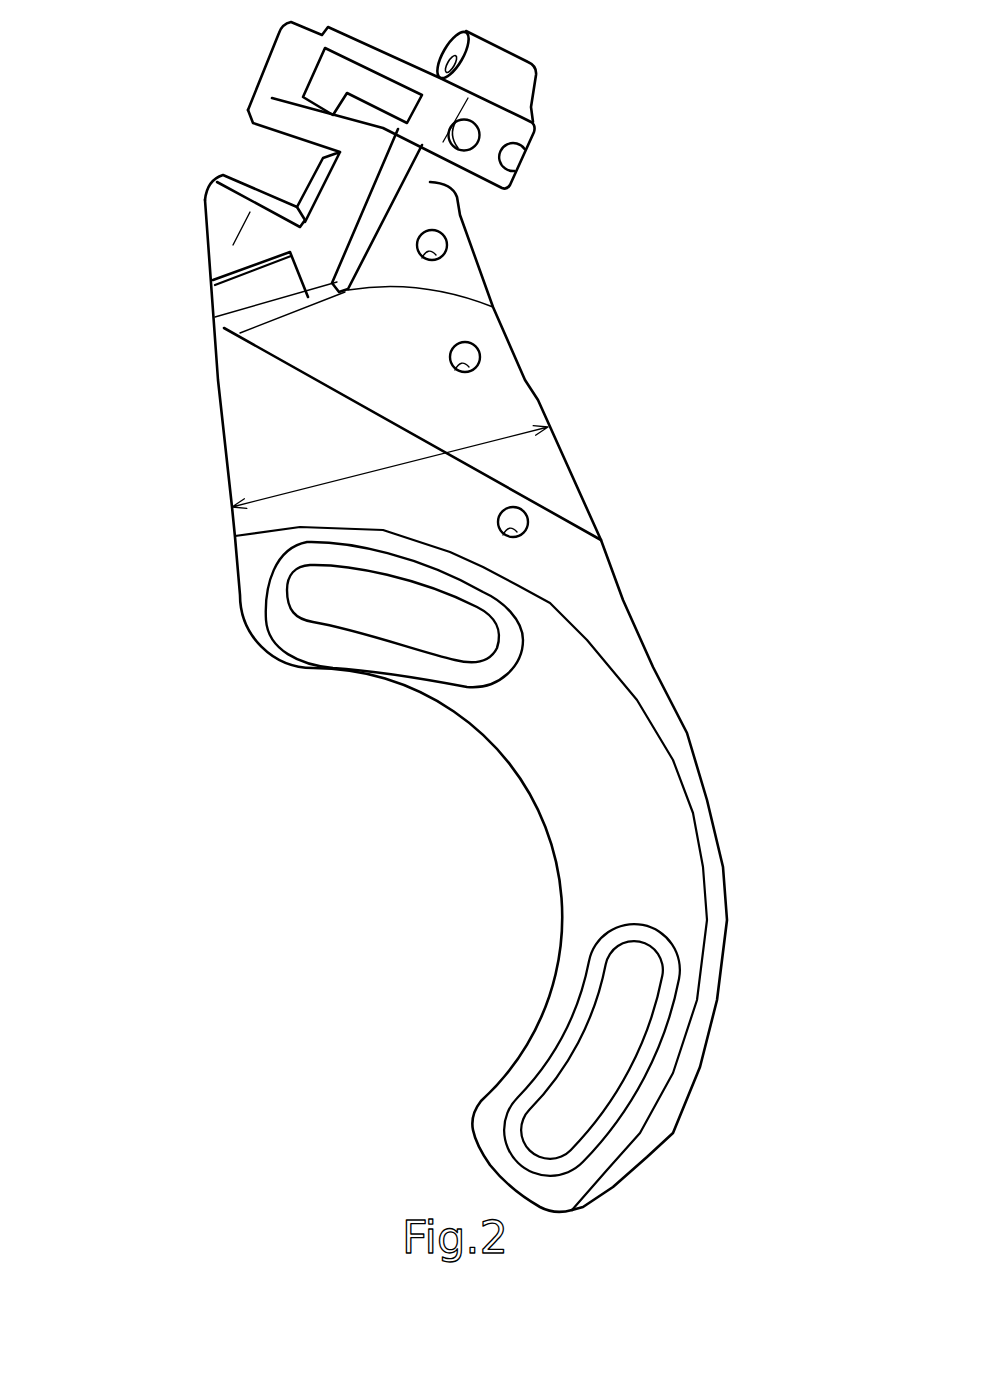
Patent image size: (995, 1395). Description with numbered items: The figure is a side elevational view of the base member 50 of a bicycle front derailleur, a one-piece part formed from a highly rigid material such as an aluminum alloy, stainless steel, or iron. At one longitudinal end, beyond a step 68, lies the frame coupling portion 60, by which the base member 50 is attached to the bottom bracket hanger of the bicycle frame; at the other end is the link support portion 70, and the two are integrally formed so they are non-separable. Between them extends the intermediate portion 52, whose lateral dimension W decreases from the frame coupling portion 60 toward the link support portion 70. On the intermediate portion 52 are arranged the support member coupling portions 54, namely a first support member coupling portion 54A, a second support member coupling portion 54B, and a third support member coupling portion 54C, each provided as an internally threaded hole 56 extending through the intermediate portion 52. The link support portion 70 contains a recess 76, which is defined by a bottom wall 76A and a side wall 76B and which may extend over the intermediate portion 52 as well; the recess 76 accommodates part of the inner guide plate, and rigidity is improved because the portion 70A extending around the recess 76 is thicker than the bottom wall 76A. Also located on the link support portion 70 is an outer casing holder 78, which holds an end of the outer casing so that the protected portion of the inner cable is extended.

The base member 50 is at (750, 140).
The intermediate portion 52 is at (529, 408).
The support member coupling portions 54 is at (562, 383).
The first support member coupling portion 54A is at (447, 252).
The second support member coupling portion 54B is at (472, 338).
The third support member coupling portion 54C is at (522, 510).
The holes 56 is at (430, 260).
The frame coupling portion 60 is at (668, 814).
The step 68 is at (450, 553).
The link support portion 70 is at (317, 275).
The portion extending around the recess 70A is at (459, 206).
The recess 76 is at (110, 210).
The bottom wall 76A is at (226, 212).
The side wall 76B is at (256, 312).
The outer casing holder 78 is at (515, 58).